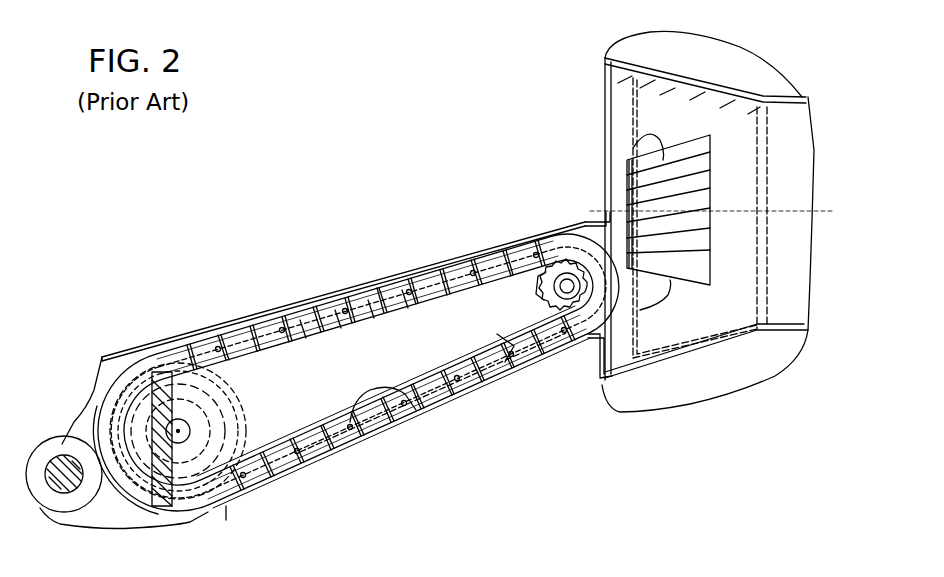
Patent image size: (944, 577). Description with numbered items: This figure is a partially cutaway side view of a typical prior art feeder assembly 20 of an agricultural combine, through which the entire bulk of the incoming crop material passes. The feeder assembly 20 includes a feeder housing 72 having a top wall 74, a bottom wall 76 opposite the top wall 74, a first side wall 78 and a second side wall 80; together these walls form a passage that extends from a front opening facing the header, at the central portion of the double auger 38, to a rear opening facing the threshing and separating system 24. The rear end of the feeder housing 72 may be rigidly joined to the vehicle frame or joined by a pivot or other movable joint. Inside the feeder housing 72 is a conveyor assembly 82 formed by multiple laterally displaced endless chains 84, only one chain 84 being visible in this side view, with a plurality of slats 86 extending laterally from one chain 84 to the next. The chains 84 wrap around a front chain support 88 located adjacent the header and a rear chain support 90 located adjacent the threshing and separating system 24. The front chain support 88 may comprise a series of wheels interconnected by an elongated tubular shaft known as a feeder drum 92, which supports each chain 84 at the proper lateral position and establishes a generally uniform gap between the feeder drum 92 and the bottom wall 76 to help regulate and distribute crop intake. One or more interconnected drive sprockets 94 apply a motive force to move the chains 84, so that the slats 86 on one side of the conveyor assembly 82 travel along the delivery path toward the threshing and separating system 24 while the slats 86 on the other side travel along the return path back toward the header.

The feeder assembly 20 is at (372, 249).
The threshing and separating system 24 is at (713, 78).
The double auger 38 is at (66, 442).
The feeder housing 72 is at (330, 460).
The top wall 74 is at (445, 262).
The bottom wall 76 is at (497, 390).
The first side wall 78 is at (500, 340).
The second side wall 80 is at (388, 412).
The conveyor assembly 82 is at (358, 379).
The endless chain 84 is at (308, 340).
The slat 86 is at (253, 320).
The front chain support 88 is at (246, 409).
The rear chain support 90 is at (597, 340).
The feeder drum 92 is at (249, 392).
The drive sprocket 94 is at (538, 307).